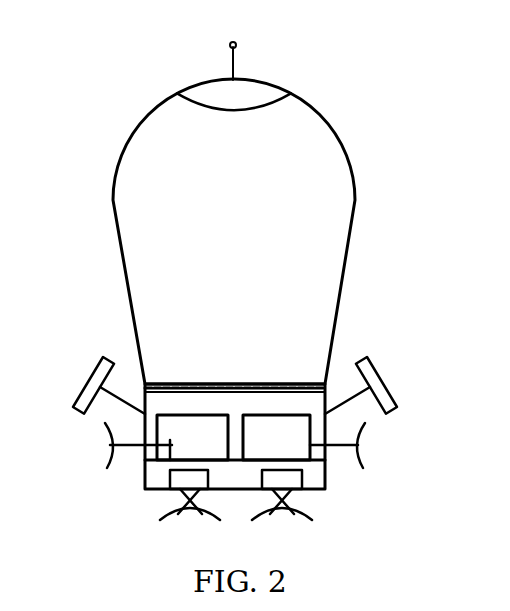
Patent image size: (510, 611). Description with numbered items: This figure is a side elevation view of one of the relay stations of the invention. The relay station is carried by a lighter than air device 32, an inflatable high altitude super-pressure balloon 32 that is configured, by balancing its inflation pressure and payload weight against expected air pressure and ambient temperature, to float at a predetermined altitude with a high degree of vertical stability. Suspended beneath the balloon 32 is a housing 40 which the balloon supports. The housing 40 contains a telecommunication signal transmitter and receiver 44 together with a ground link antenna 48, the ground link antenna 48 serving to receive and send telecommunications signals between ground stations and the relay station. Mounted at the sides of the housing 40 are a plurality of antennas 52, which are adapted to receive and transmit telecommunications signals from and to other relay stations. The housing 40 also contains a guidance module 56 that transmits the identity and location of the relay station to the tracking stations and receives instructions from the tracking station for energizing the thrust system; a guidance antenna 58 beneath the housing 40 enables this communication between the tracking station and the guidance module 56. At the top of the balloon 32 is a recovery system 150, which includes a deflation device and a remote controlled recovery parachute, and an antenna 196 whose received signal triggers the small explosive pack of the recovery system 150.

The lighter than air device 32 is at (148, 190).
The antenna 196 is at (237, 55).
The recovery system 150 is at (266, 74).
The housing 40 is at (326, 490).
The guidance module 56 is at (283, 435).
The telecommunication signal transmitter and receiver 44 is at (169, 462).
The antennas 52 is at (105, 438).
The ground link antenna 48 is at (172, 519).
The guidance antenna 58 is at (303, 519).